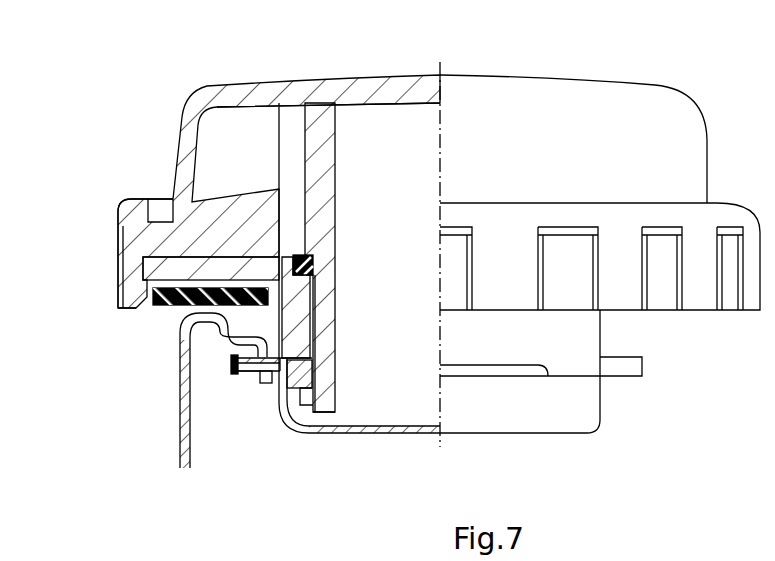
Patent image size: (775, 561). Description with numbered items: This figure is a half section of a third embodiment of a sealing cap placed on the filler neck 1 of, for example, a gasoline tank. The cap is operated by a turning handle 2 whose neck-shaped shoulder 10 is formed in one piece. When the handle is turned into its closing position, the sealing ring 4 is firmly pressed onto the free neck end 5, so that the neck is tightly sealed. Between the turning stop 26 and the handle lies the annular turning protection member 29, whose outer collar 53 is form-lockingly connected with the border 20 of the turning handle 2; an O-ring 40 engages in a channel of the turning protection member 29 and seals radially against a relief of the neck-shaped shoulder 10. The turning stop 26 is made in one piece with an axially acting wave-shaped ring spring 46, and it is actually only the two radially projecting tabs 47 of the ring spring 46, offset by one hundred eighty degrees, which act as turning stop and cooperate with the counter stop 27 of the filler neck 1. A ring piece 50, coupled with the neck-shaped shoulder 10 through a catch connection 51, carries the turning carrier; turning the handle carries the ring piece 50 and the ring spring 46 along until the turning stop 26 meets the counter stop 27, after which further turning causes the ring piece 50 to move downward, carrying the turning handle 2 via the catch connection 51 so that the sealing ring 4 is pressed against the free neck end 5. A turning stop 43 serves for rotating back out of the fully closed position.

The filler neck 1 is at (180, 382).
The turning handle 2 is at (668, 148).
The sealing ring 4 is at (244, 266).
The free neck end 5 is at (185, 310).
The neck-shaped shoulder 10 is at (322, 185).
The free border 20 is at (128, 260).
The turning stop 26 is at (233, 370).
The counter stop 27 is at (257, 372).
The turning protection member 29 is at (300, 318).
The O-ring 40 is at (313, 263).
The turning stop 43 is at (273, 375).
The wave-shaped ring spring 46 is at (313, 343).
The radially projecting tabs 47 is at (222, 360).
The ring piece 50 is at (313, 380).
The catch connection 51 is at (298, 404).
The outer collar 53 is at (197, 258).